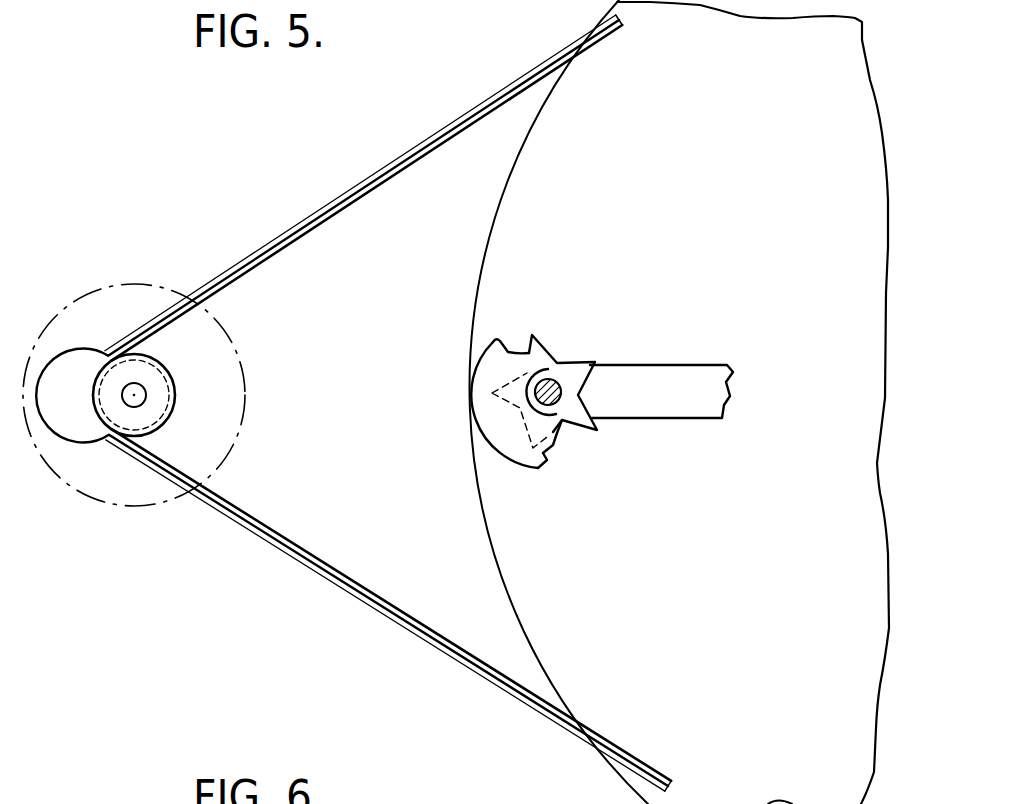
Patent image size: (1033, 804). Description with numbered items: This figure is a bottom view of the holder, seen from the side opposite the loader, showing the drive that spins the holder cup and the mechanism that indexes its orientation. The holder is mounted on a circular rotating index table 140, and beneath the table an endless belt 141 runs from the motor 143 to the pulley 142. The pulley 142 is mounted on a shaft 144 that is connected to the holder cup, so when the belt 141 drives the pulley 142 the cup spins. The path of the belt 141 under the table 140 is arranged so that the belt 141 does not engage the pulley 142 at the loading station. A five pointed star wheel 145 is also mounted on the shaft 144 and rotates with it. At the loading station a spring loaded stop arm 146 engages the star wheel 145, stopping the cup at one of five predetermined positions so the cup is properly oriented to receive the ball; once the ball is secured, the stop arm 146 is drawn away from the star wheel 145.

The rotating index table 140 is at (480, 246).
The endless belt 141 is at (392, 163).
The pulley 142 is at (480, 387).
The motor 143 is at (80, 290).
The shaft 144 is at (560, 373).
The star wheel 145 is at (538, 343).
The stop arm 146 is at (673, 371).